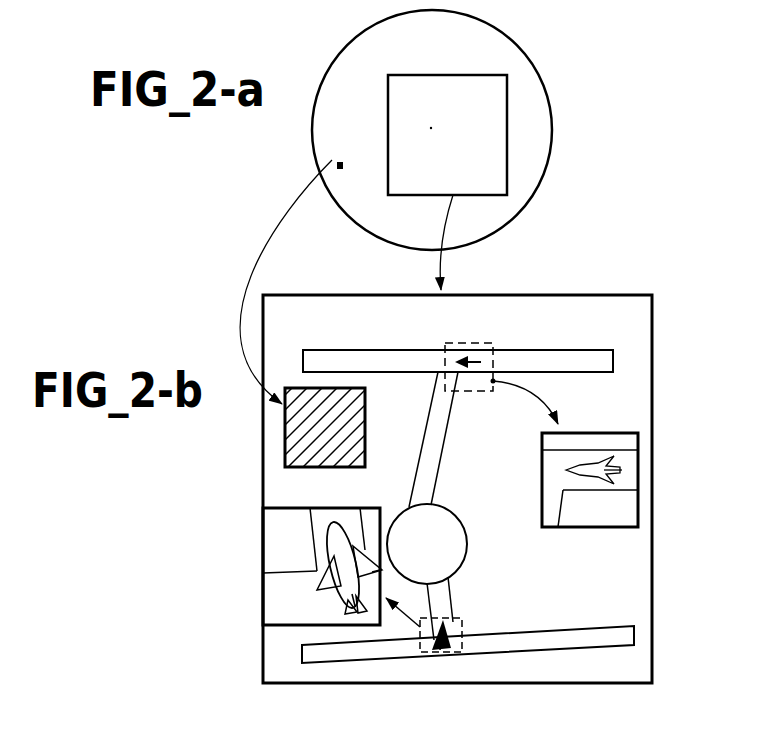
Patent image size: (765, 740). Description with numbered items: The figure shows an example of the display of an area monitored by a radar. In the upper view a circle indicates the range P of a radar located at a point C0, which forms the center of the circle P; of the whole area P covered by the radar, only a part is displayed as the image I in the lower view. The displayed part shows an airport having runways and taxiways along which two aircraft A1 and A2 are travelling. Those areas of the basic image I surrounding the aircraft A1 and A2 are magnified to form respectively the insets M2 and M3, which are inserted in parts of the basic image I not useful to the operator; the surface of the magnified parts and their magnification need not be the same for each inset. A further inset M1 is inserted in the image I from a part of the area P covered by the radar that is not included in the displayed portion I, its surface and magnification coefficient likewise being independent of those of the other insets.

In FIG. 2a, the range of the radar P is at (500, 28).
In FIG. 2a, the image I is at (507, 107).
In FIG. 2b, the image I is at (652, 322).
In FIG. 2a, the radar location point C0 is at (429, 128).
In FIG. 2a, the inset M1 is at (336, 164).
In FIG. 2b, the inset M1 is at (365, 405).
In FIG. 2b, the inset M2 is at (544, 490).
In FIG. 2b, the inset M3 is at (282, 598).
In FIG. 2b, the aircraft A1 is at (484, 345).
In FIG. 2b, the aircraft A2 is at (462, 625).